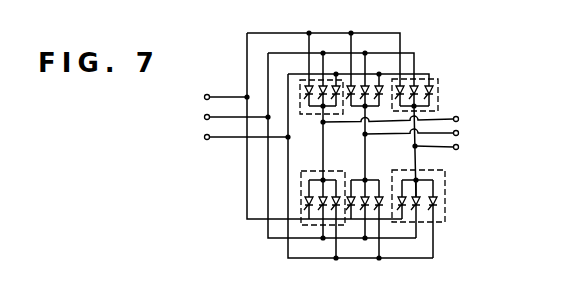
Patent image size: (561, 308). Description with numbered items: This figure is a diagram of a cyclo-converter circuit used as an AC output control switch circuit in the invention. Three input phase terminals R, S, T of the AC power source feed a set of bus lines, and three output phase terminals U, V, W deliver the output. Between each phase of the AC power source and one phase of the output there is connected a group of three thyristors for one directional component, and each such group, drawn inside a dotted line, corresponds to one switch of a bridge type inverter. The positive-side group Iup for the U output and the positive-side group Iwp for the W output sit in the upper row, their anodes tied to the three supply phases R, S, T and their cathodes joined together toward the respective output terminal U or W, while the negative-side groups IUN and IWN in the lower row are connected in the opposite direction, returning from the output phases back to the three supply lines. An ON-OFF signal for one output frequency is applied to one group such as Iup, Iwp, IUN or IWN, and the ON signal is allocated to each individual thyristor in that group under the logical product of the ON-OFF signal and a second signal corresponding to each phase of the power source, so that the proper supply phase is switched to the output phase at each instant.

The U-phase positive-side thyristor group Iup is at (303, 94).
The W-phase positive-side thyristor group Iwp is at (438, 95).
The U-phase negative-side thyristor group IUN is at (300, 207).
The W-phase negative-side thyristor group IWN is at (445, 200).
The input phase terminal R is at (216, 97).
The input phase terminal S is at (227, 117).
The input phase terminal T is at (236, 137).
The output phase terminal U is at (475, 119).
The output phase terminal V is at (474, 133).
The output phase terminal W is at (475, 148).